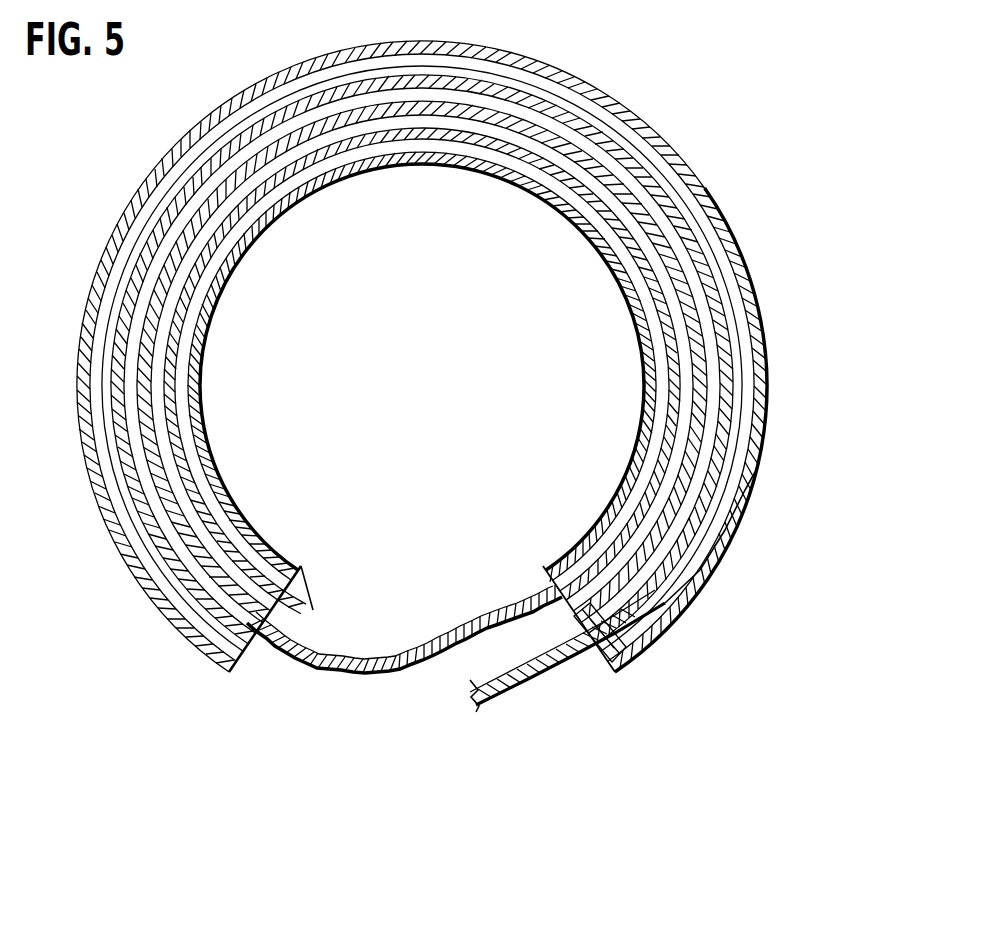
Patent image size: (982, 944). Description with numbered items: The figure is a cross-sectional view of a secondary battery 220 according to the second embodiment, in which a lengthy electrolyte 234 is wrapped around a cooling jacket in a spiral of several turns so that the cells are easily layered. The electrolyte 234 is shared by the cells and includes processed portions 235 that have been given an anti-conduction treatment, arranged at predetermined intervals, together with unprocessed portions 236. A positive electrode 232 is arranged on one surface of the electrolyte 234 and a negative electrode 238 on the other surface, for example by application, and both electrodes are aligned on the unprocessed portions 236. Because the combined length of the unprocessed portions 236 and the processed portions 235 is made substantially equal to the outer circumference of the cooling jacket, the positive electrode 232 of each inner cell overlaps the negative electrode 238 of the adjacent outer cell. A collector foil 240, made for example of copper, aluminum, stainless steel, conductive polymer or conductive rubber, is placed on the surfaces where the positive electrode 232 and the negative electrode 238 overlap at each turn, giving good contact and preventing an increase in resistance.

The secondary battery 220 is at (653, 80).
The positive electrode 232 is at (313, 610).
The electrolyte 234 is at (310, 610).
The processed portion 235 is at (397, 673).
The unprocessed portion 236 is at (634, 655).
The negative electrode 238 is at (300, 580).
The collector foil 240 is at (300, 620).